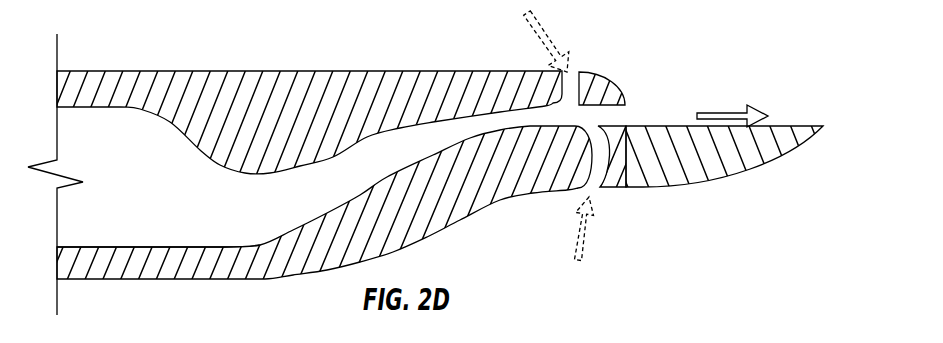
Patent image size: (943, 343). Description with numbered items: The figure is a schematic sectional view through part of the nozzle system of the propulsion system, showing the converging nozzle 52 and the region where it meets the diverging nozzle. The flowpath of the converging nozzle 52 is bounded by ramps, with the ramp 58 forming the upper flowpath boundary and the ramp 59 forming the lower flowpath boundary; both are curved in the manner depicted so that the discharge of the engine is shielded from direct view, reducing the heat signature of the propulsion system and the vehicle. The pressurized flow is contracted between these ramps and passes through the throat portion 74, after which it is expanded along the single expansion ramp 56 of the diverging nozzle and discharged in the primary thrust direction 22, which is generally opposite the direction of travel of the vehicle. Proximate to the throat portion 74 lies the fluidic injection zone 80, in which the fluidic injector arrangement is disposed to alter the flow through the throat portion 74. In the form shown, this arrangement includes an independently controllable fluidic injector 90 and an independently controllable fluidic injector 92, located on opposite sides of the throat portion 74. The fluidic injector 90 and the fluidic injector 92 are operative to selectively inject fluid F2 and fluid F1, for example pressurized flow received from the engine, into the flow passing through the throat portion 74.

The primary thrust direction 22 is at (735, 108).
The converging nozzle 52 is at (172, 288).
The single expansion ramp 56 is at (802, 125).
The ramp 58 is at (173, 117).
The ramp 59 is at (133, 247).
The throat portion 74 is at (622, 115).
The fluidic injection zone 80 is at (559, 113).
The fluidic injector 90 is at (573, 72).
The fluidic injector 92 is at (593, 187).
The fluid F1 is at (583, 243).
The fluid F2 is at (540, 22).